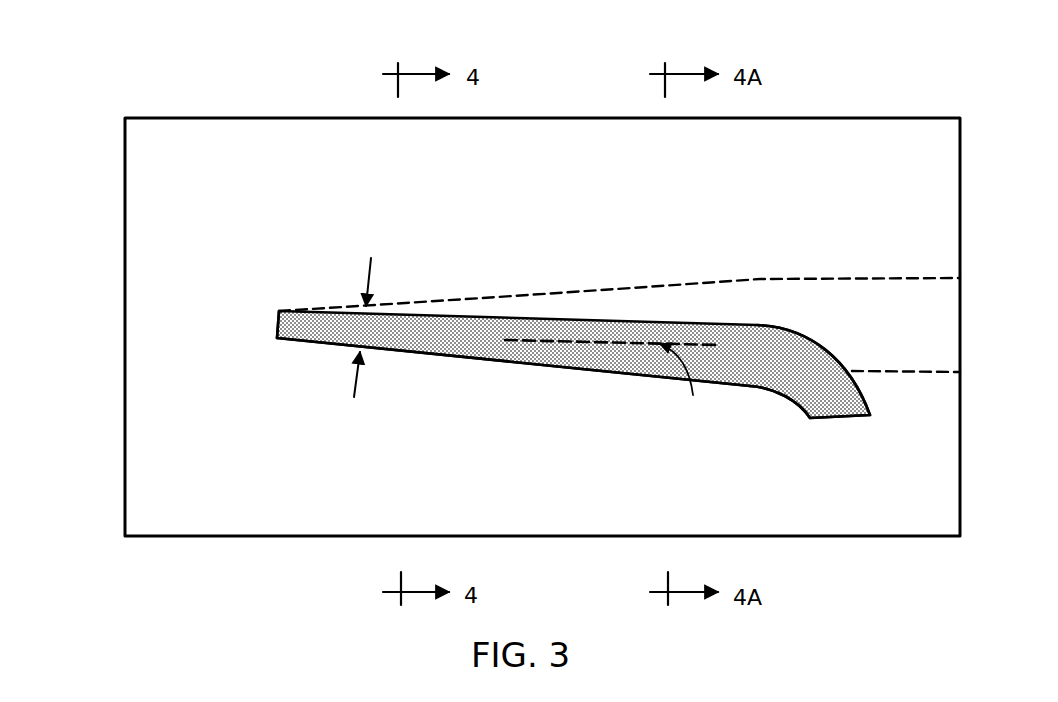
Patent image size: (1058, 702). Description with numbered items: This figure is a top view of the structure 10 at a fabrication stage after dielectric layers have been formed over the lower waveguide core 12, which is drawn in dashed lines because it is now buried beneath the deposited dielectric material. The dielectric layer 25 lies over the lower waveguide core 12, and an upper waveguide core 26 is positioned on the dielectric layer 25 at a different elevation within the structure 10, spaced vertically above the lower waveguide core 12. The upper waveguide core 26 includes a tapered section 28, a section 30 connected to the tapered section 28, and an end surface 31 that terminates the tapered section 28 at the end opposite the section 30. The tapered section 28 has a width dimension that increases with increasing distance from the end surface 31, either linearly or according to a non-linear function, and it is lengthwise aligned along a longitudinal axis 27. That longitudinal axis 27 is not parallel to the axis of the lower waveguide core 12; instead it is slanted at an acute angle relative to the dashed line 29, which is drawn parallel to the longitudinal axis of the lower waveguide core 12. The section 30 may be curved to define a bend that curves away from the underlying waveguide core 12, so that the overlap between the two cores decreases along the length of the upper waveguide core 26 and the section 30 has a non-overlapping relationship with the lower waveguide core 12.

The structure 10 is at (166, 78).
The waveguide core 12 is at (845, 318).
The dielectric layer 25 is at (180, 457).
The waveguide core 26 is at (540, 381).
The longitudinal axis 27 is at (615, 348).
The tapered section 28 is at (460, 343).
The dashed line 29 is at (628, 338).
The section 30 is at (803, 381).
The end surface 31 is at (277, 318).